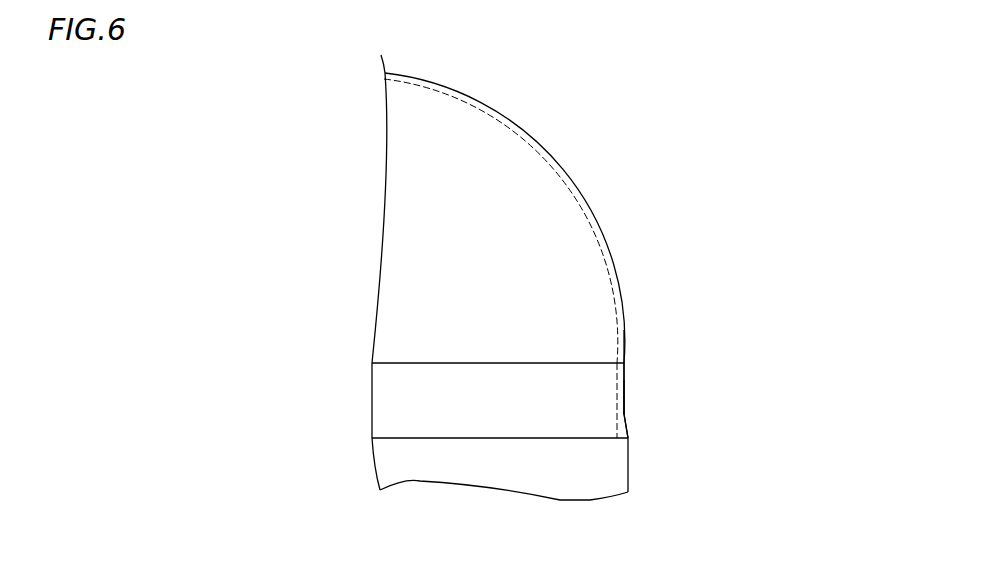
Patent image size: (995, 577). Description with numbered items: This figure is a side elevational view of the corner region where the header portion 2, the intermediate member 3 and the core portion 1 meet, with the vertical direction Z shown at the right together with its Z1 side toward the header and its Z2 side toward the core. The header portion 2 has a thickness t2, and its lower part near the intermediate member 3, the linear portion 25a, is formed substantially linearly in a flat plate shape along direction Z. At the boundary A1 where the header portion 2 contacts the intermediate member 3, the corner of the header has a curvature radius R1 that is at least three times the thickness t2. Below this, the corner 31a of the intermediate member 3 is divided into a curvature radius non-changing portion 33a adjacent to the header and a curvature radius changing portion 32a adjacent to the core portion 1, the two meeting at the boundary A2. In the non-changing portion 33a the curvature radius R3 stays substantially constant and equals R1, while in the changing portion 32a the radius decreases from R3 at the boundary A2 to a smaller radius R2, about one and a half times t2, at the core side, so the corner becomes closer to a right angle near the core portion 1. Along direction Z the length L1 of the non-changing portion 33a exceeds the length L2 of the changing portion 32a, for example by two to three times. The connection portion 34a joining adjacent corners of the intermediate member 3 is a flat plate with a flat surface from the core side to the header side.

The header portion 2 is at (570, 229).
The thickness of the header portion t2 is at (578, 298).
The intermediate member 3 is at (372, 401).
The core portion 1 is at (622, 461).
The connection portion 34a is at (445, 412).
The linear portion 25a is at (627, 343).
The boundary A1 is at (628, 363).
The corner of the intermediate member 31a is at (630, 368).
The curvature radius non-changing portion 33a is at (625, 390).
The curvature radius of the header portion corner R1 is at (622, 360).
The curvature radius at the header portion side R3 is at (622, 411).
The boundary A2 is at (628, 414).
The curvature radius changing portion 32a is at (629, 430).
The curvature radius at the core portion side R2 is at (627, 438).
The length of the curvature radius non-changing portion L1 is at (522, 363).
The length of the curvature radius changing portion L2 is at (623, 414).
The direction Z is at (815, 303).
The Z1 direction Z1 is at (850, 303).
The Z2 direction Z2 is at (850, 365).